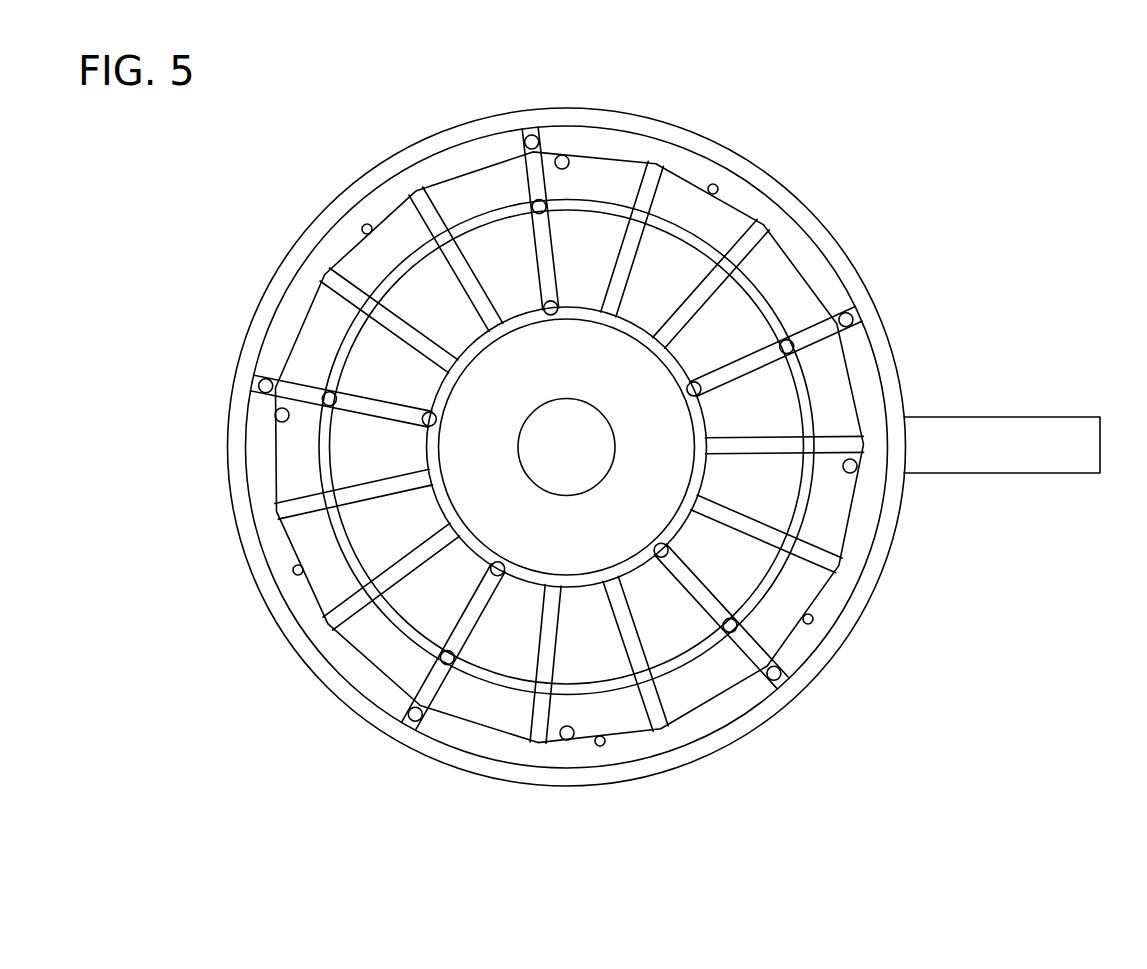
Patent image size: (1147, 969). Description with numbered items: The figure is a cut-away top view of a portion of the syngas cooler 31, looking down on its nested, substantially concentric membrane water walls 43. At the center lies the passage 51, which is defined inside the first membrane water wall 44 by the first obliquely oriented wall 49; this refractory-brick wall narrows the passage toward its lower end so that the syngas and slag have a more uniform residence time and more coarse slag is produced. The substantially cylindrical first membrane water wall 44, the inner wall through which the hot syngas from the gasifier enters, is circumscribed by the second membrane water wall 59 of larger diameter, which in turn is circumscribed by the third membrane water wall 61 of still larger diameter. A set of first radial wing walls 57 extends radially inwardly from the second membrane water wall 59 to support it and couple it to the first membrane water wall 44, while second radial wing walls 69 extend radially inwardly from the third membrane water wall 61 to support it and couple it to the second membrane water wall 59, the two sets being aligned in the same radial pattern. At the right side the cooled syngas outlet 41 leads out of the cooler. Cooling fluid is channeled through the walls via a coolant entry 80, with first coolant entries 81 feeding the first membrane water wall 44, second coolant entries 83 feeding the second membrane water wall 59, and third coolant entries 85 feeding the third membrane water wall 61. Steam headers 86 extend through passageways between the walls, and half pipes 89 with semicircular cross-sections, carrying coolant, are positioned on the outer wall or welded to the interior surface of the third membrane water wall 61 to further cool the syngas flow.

The syngas cooler 31 is at (963, 121).
The cooled syngas outlet 41 is at (1010, 416).
The membrane water walls 43 is at (544, 572).
The first membrane water wall 44 is at (702, 474).
The first obliquely oriented wall 49 is at (297, 548).
The passage 51 is at (570, 450).
The first radial wing walls 57 is at (458, 283).
The second membrane water wall 59 is at (806, 387).
The third membrane water wall 61 is at (822, 278).
The second radial wing walls 69 is at (436, 190).
The coolant entry 80 is at (725, 630).
The first coolant entries 81 is at (551, 316).
The second coolant entries 83 is at (545, 211).
The third coolant entries 85 is at (266, 379).
The steam headers 86 is at (282, 408).
The half pipes 89 is at (367, 224).